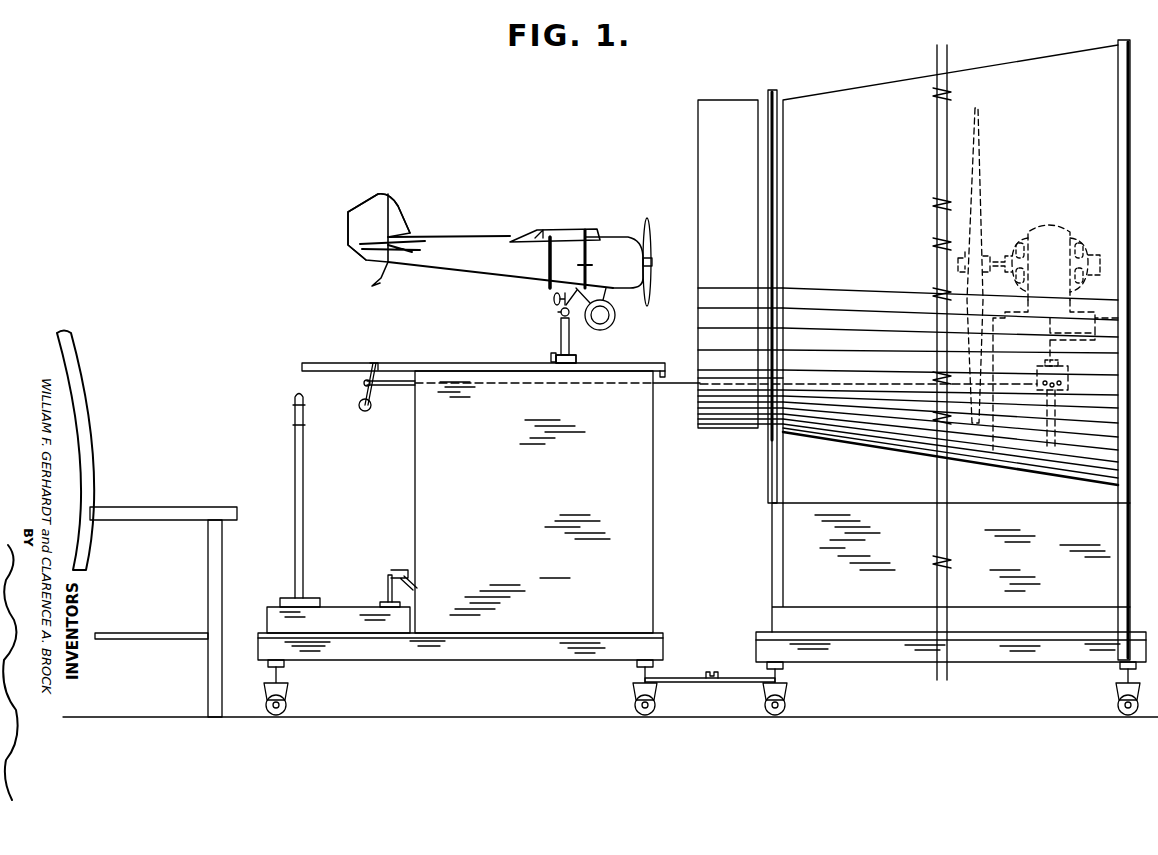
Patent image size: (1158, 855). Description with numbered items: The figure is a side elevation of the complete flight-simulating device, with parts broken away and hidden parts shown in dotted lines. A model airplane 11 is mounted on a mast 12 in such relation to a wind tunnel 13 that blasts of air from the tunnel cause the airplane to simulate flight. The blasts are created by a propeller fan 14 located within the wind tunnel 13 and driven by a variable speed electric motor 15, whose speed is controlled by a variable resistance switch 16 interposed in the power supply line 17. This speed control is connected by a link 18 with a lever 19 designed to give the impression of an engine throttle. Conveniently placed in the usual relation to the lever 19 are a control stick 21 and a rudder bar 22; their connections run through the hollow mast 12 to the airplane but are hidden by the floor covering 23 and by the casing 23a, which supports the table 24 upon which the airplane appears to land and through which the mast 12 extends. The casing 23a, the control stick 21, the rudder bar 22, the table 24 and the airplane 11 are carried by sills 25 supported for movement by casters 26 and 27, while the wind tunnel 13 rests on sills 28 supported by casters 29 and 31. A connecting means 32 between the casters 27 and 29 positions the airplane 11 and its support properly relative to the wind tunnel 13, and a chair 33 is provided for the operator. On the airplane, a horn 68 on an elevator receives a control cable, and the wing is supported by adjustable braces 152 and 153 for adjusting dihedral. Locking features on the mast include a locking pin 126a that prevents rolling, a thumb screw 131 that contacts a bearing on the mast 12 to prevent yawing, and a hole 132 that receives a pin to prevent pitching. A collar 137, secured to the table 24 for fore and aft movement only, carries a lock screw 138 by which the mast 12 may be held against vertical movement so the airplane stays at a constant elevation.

The model airplane 11 is at (500, 235).
The mast 12 is at (560, 333).
The wind tunnel 13 is at (835, 92).
The propeller fan 14 is at (985, 185).
The variable speed electric motor 15 is at (1048, 224).
The variable resistance switch 16 is at (1070, 383).
The power supply line 17 is at (1058, 431).
The link 18 is at (691, 392).
The lever 19 is at (363, 386).
The control stick 21 is at (306, 479).
The rudder bar 22 is at (393, 578).
The floor covering 23 is at (338, 606).
The casing 23a is at (655, 528).
The table 24 is at (428, 362).
The sills 25 is at (478, 656).
The caster 26 is at (289, 700).
The caster 27 is at (633, 697).
The sills 28 is at (998, 661).
The caster 29 is at (788, 698).
The caster 31 is at (1116, 701).
The connecting means 32 is at (743, 684).
The chair 33 is at (225, 578).
The horn 68 is at (378, 262).
The locking pin 126a is at (640, 222).
The thumb screw 131 is at (553, 298).
The hole 132 is at (560, 313).
The collar 137 is at (578, 359).
The lock screw 138 is at (552, 358).
The adjustable brace 152 is at (592, 272).
The adjustable brace 153 is at (548, 262).